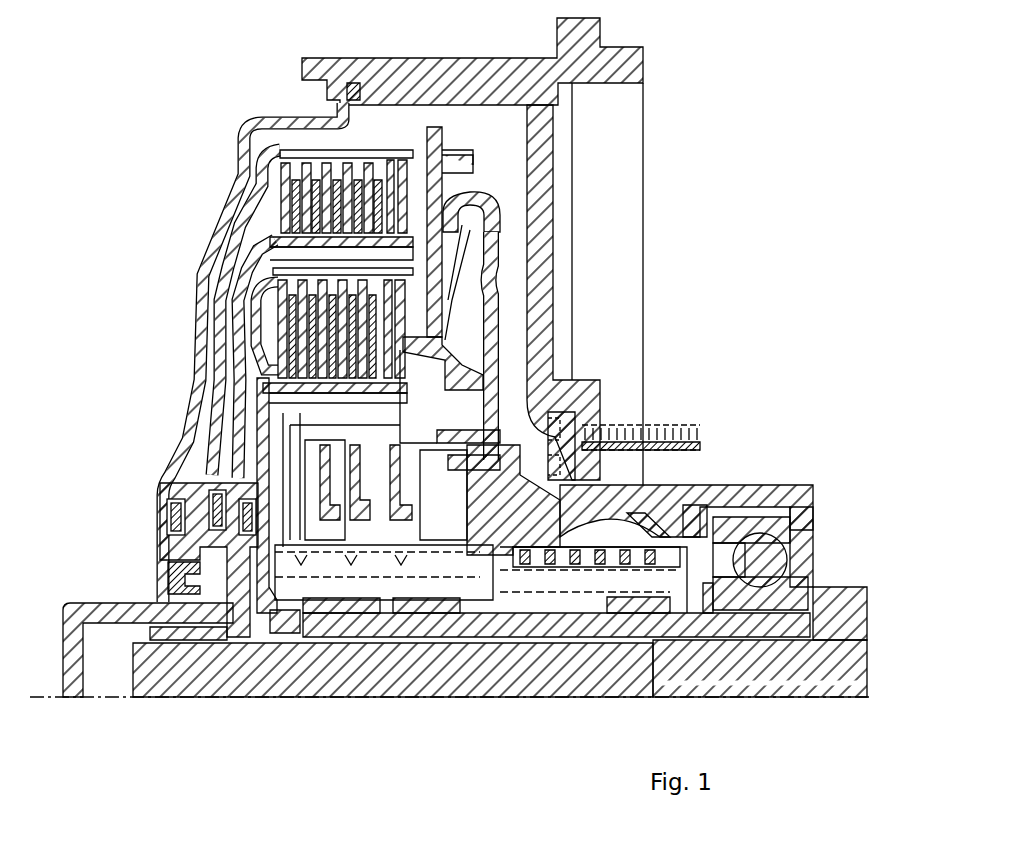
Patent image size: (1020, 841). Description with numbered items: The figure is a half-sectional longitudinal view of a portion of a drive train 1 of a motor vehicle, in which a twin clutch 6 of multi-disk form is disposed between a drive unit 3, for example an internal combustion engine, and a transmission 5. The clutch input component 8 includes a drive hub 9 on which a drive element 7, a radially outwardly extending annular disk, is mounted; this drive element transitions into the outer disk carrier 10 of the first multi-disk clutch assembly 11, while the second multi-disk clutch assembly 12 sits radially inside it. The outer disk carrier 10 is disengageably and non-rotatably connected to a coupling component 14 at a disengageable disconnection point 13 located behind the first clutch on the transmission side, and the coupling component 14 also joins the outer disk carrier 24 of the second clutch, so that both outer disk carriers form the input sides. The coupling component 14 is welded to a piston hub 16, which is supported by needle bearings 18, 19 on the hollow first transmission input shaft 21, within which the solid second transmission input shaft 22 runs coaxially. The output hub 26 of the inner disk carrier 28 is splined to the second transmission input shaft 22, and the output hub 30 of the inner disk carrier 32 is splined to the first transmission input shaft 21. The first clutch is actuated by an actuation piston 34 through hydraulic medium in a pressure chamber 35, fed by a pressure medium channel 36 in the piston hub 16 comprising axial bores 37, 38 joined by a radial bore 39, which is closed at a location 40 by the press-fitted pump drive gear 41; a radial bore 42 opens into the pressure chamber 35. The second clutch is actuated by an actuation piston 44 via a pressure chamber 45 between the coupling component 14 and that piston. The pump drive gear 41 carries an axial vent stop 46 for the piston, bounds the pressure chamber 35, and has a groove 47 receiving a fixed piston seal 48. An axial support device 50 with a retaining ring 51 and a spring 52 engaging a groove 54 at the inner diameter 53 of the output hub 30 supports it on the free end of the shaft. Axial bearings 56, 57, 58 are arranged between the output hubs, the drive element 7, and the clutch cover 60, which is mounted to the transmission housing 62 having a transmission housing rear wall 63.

The drive train 1 is at (152, 70).
The drive unit 3 is at (48, 674).
The transmission 5 is at (896, 674).
The twin clutch 6 is at (275, 88).
The drive element 7 is at (213, 352).
The clutch input component 8 is at (100, 588).
The drive hub 9 is at (75, 618).
The outer disk carrier 10 is at (262, 165).
The first multi-disk clutch assembly 11 is at (348, 212).
The second multi-disk clutch assembly 12 is at (348, 346).
The disengageable disconnection point 13 is at (455, 135).
The coupling component 14 is at (475, 222).
The piston hub 16 is at (400, 610).
The needle bearing 18 is at (430, 585).
The needle bearing 19 is at (625, 612).
The first transmission input shaft 21 is at (545, 625).
The second transmission input shaft 22 is at (520, 568).
The outer disk carrier 24 is at (258, 297).
The output hub 26 is at (210, 642).
The inner disk carrier 28 is at (233, 334).
The output hub 30 is at (330, 572).
The inner disk carrier 32 is at (257, 387).
The actuation piston 34 is at (500, 305).
The pressure chamber 35 is at (472, 518).
The pressure medium channel 36 is at (668, 580).
The axial bore 37 is at (640, 595).
The axial bore 38 is at (325, 610).
The radial bore 39 is at (465, 605).
The location 40 is at (480, 592).
The pump drive gear 41 is at (665, 485).
The radial bore 42 is at (455, 578).
The actuation piston 44 is at (553, 373).
The pressure chamber 45 is at (345, 457).
The axial vent stop 46 is at (600, 470).
The groove 47 is at (480, 465).
The seal 48 is at (515, 430).
The axial support device 50 is at (288, 634).
The retaining ring 51 is at (268, 634).
The spring 52 is at (300, 634).
The inner diameter 53 is at (190, 566).
The groove 54 is at (300, 624).
The axial bearing 56 is at (239, 515).
The axial bearing 57 is at (209, 498).
The axial bearing 58 is at (167, 518).
The clutch cover 60 is at (250, 135).
The transmission housing 62 is at (430, 85).
The transmission housing rear wall 63 is at (545, 253).